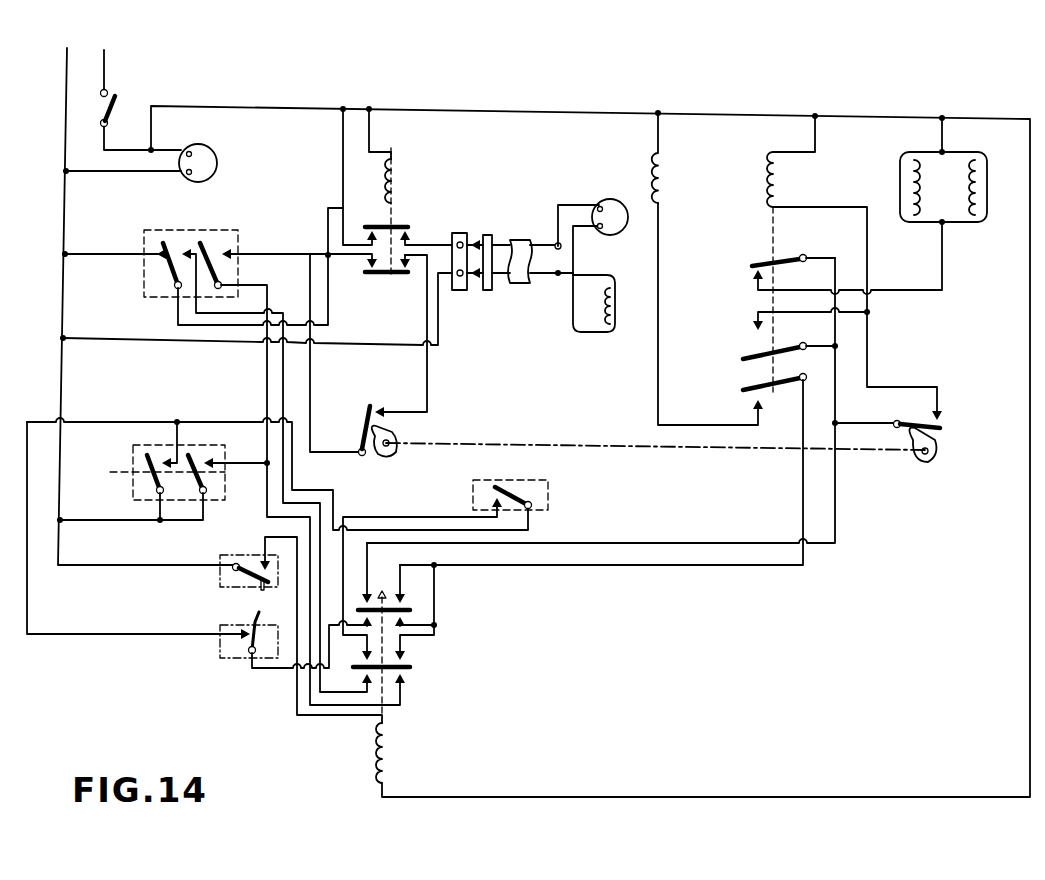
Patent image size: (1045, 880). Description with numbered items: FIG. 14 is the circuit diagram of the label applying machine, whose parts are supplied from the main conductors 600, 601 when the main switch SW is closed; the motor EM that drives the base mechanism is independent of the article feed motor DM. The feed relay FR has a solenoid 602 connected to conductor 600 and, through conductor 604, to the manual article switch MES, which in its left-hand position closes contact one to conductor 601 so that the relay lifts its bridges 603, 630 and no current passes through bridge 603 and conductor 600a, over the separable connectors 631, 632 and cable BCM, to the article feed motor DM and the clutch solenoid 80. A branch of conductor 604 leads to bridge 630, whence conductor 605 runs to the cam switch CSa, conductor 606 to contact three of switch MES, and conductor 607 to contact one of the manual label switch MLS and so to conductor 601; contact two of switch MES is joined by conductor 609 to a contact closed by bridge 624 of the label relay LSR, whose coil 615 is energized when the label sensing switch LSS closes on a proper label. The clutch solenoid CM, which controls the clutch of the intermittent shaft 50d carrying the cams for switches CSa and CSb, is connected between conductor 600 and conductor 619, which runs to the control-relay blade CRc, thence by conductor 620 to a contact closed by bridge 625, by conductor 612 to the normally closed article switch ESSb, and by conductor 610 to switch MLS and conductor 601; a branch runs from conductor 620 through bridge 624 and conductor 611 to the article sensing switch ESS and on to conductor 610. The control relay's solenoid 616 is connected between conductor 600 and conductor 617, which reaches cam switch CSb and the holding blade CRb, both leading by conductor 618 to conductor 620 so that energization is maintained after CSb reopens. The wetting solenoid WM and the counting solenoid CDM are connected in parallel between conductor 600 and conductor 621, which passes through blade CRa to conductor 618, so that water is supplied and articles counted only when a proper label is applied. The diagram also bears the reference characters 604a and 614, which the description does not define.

The main conductor 600 is at (108, 130).
The main conductor 601 is at (62, 112).
The solenoid of feed relay 602 is at (386, 190).
The switch bridge 603 is at (437, 208).
The conductor 604 is at (326, 222).
The connector block 604a is at (438, 247).
The conductor 605 is at (428, 381).
The conductor 606 is at (322, 456).
The conductor 607 is at (266, 478).
The conductor 609 is at (247, 328).
The conductor 610 is at (100, 422).
The conductor 611 is at (420, 517).
The conductor 612 is at (283, 672).
The line to relay LSR coil 614 is at (332, 716).
The coil of label relay 615 is at (390, 754).
The actuating solenoid of control relay 616 is at (782, 191).
The conductor 617 is at (845, 208).
The conductor 618 is at (836, 498).
The conductor 619 is at (650, 378).
The conductor 620 is at (752, 568).
The conductor 621 is at (942, 262).
The bridge of label relay 624 is at (412, 672).
The bridge of label relay 625 is at (412, 616).
The bridge of feed relay 630 is at (399, 279).
The separable connector 631 is at (482, 296).
The separable connector 632 is at (480, 226).
The conductor 600a is at (534, 247).
The solenoid 80 is at (612, 302).
The intermittent shaft 50d is at (600, 455).
The main switch SW is at (122, 100).
The motor EM is at (198, 163).
The manual envelope switch MES is at (150, 278).
The feed relay FR is at (408, 153).
The article feed motor DM is at (600, 237).
The cable BCM is at (538, 291).
The clutch solenoid CM is at (678, 158).
The counting device solenoid CDM is at (881, 160).
The wetting solenoid WM is at (966, 171).
The control relay blade CRa is at (790, 256).
The control relay blade CRb is at (785, 345).
The control relay blade CRc is at (772, 392).
The cam switch CSa is at (428, 412).
The cam switch CSb is at (909, 447).
The article sensing switch ESS is at (549, 497).
The label sensing switch LSS is at (239, 583).
The second article sensing switch ESSb is at (222, 658).
The manual label switch MLS is at (134, 492).
The label relay LSR is at (488, 590).